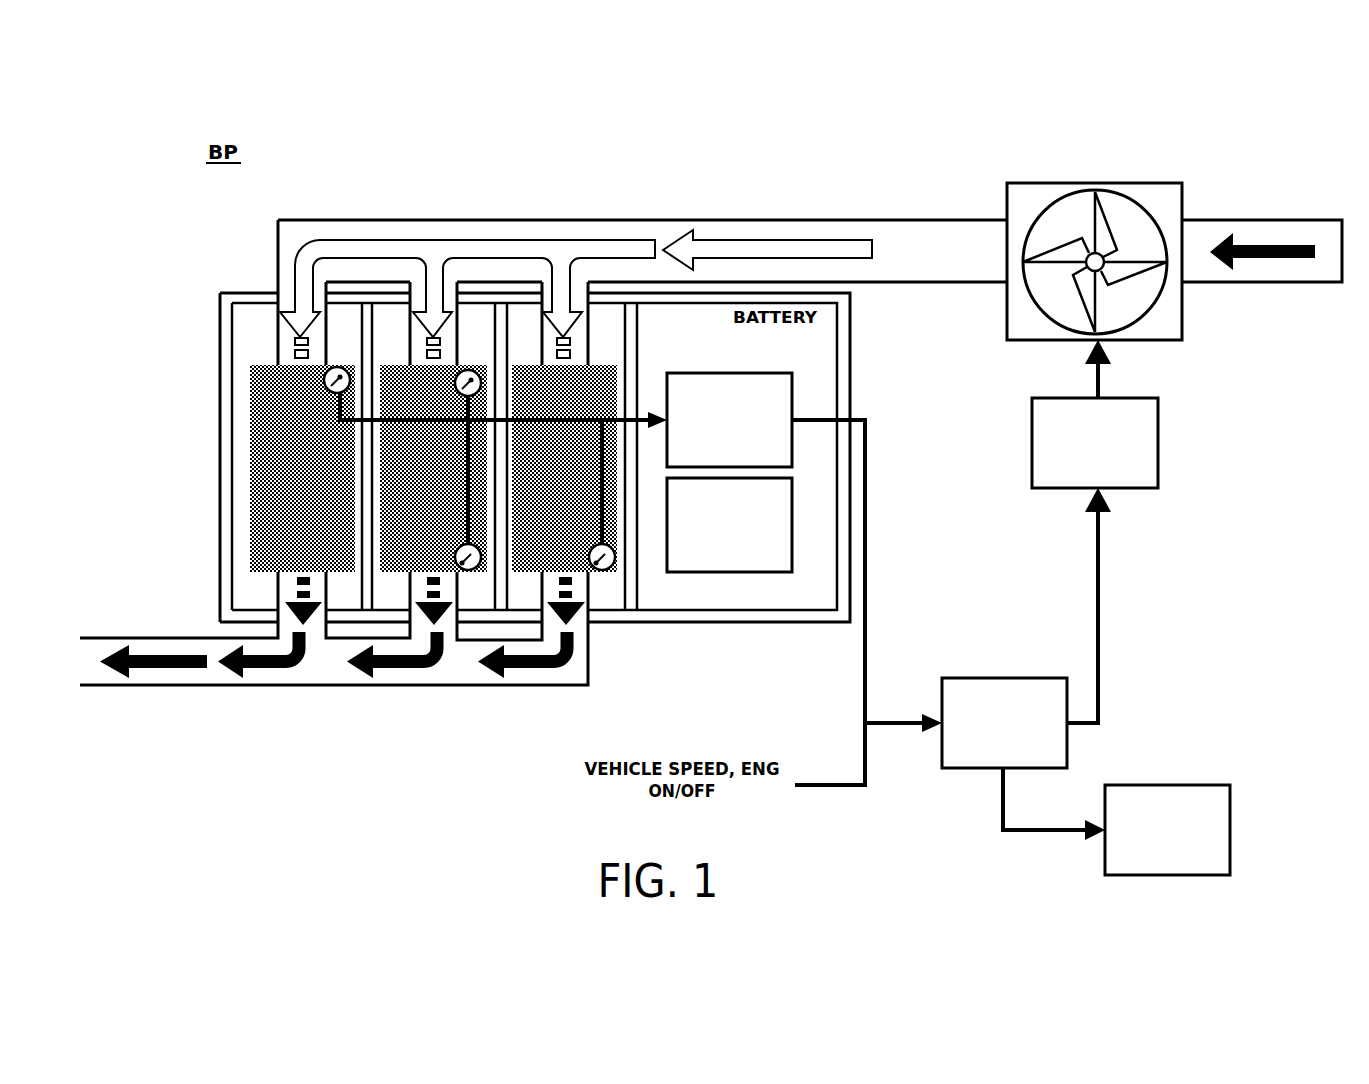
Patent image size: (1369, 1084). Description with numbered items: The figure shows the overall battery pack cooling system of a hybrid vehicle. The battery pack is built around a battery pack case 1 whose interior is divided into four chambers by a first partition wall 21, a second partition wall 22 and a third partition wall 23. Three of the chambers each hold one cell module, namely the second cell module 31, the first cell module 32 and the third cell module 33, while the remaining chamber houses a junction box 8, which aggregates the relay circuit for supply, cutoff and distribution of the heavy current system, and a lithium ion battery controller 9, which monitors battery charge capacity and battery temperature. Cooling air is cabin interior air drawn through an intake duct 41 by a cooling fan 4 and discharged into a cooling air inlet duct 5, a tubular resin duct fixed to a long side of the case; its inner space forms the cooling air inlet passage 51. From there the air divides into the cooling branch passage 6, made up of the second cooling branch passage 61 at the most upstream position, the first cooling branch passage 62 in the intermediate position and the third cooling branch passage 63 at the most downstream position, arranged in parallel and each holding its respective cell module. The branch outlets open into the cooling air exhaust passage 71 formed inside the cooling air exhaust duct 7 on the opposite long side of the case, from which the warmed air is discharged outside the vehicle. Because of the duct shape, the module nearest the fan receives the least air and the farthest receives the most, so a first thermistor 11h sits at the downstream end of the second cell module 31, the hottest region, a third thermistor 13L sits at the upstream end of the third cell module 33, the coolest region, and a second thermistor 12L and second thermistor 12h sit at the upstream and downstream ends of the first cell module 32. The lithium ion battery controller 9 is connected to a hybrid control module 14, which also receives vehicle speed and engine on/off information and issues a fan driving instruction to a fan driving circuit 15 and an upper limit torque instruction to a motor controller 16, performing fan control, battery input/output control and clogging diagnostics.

The battery pack case 1 is at (238, 284).
The cooling fan 4 is at (1161, 205).
The cooling air inlet duct 5 is at (723, 219).
The cooling branch passage 6 is at (212, 285).
The cooling air exhaust duct 7 is at (423, 688).
The junction box 8 is at (780, 550).
The lithium ion battery controller 9 is at (780, 400).
The first thermistor 11h is at (596, 548).
The second thermistor 12h is at (458, 548).
The second thermistor 12L is at (469, 370).
The third thermistor 13L is at (332, 393).
The hybrid control module 14 is at (965, 677).
The fan driving circuit 15 is at (1158, 447).
The motor controller 16 is at (1208, 784).
The first partition wall 21 is at (633, 328).
The second partition wall 22 is at (502, 352).
The third partition wall 23 is at (360, 352).
The second cell module 31 is at (608, 362).
The first cell module 32 is at (394, 362).
The third cell module 33 is at (265, 362).
The intake duct 41 is at (1232, 218).
The cooling air inlet passage 51 is at (543, 232).
The second cooling branch passage 61 is at (582, 582).
The first cooling branch passage 62 is at (450, 625).
The third cooling branch passage 63 is at (323, 625).
The cooling air exhaust passage 71 is at (298, 668).